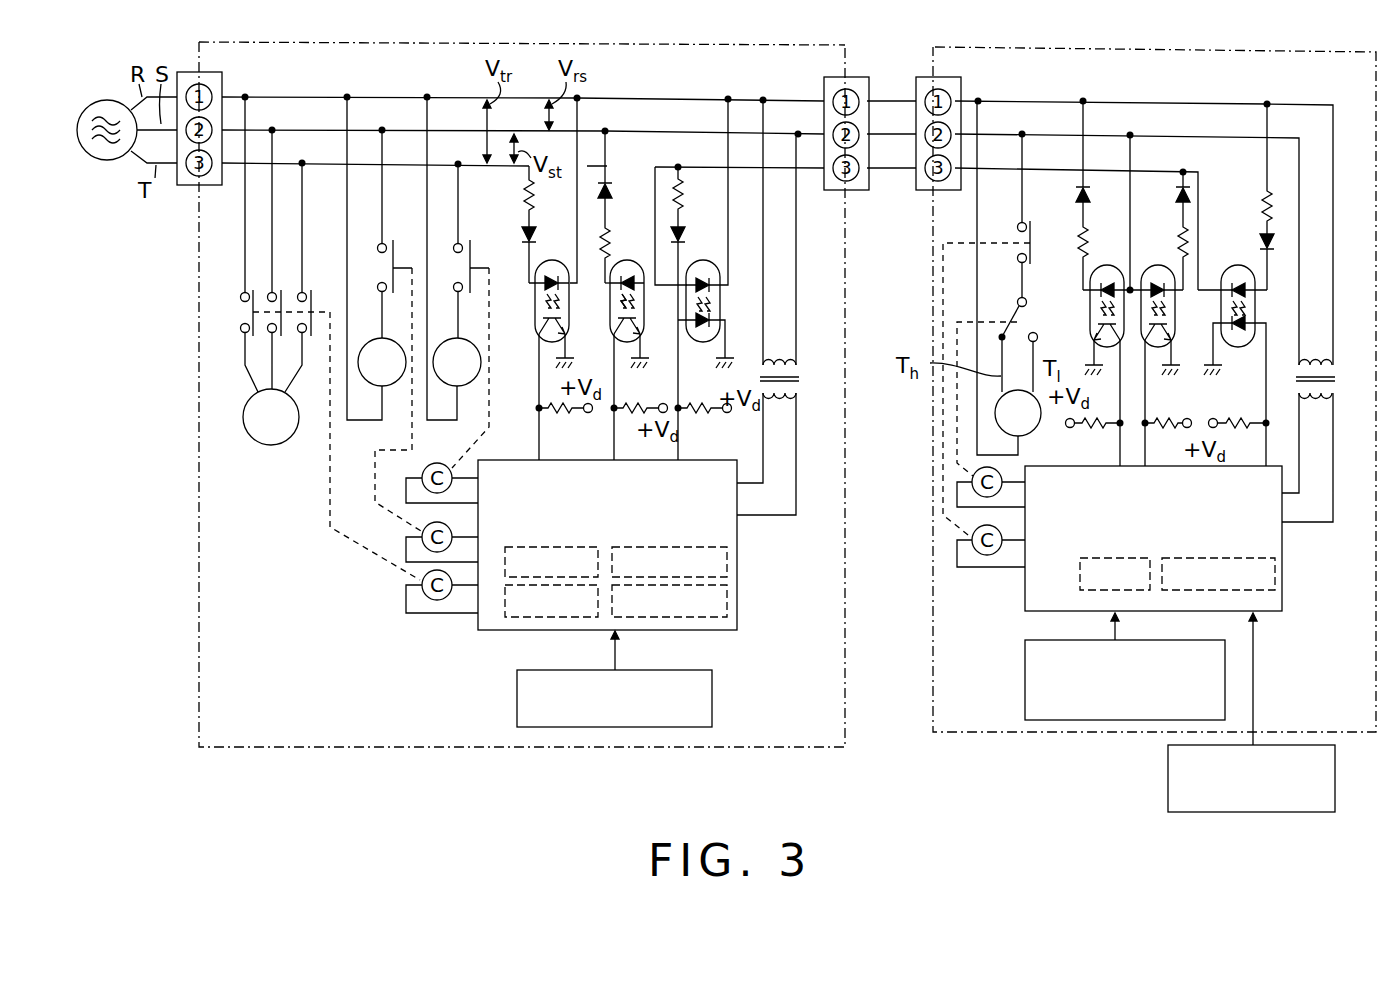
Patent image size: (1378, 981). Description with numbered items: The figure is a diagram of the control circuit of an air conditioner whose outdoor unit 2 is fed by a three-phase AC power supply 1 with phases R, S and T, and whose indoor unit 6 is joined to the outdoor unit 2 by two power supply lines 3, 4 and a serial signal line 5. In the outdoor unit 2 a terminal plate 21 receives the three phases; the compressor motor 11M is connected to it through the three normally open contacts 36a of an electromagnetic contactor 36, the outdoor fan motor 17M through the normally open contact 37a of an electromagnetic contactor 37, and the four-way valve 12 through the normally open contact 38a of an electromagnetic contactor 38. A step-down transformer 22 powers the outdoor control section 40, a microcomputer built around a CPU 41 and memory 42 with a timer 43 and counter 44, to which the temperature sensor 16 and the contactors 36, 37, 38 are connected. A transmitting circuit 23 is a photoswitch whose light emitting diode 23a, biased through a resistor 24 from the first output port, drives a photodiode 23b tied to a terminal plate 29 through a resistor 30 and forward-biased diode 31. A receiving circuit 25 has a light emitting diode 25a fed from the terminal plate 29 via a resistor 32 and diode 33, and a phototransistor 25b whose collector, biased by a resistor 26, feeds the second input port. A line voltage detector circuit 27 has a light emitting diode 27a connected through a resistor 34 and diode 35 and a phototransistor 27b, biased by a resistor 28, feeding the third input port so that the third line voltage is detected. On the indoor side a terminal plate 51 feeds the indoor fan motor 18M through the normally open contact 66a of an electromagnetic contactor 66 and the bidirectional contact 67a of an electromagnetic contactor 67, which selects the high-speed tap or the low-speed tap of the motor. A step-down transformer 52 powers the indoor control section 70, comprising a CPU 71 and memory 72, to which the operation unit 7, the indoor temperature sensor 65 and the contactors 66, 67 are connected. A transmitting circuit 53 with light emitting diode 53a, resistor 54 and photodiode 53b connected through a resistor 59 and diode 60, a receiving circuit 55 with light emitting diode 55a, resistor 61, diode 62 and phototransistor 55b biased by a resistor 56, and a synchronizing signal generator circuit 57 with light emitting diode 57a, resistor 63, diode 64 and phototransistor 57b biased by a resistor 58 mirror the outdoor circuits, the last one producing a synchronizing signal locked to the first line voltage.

The three-phase AC power supply 1 is at (102, 98).
The outdoor unit 2 is at (416, 43).
The power supply line 3 is at (893, 100).
The power supply line 4 is at (901, 137).
The serial signal line 5 is at (880, 171).
The indoor unit 6 is at (1150, 51).
The operation unit 7 is at (1336, 768).
The compressor motor 11M is at (271, 445).
The four-way valve 12 is at (462, 386).
The temperature sensor 16 is at (714, 692).
The outdoor fan motor 17M is at (388, 386).
The indoor fan motor 18M is at (1038, 430).
The terminal plate 21 is at (189, 72).
The step-down transformer 22 is at (802, 382).
The transmitting circuit 23 is at (773, 281).
The light emitting diode 23a is at (720, 281).
The photodiode 23b is at (707, 342).
The resistor 24 is at (691, 418).
The receiving circuit 25 is at (618, 347).
The light emitting diode 25a is at (613, 322).
The phototransistor 25b is at (643, 330).
The resistor 26 is at (628, 418).
The line voltage detector circuit 27 is at (526, 280).
The light emitting diode 27a is at (540, 279).
The phototransistor 27b is at (540, 322).
The resistor 28 is at (556, 418).
The terminal plate 29 is at (856, 77).
The resistor 30 is at (684, 192).
The forward-biased diode 31 is at (686, 244).
The resistor 32 is at (610, 244).
The forward-biased diode 33 is at (608, 190).
The resistor 34 is at (525, 196).
The forward-biased diode 35 is at (533, 230).
The electromagnetic contactor 36 is at (421, 584).
The normally open contacts 36a is at (300, 292).
The electromagnetic contactor 37 is at (421, 536).
The normally open contact 37a is at (394, 240).
The electromagnetic contactor 38 is at (438, 463).
The normally open contact 38a is at (473, 250).
The outdoor control section 40 is at (625, 563).
The CPU 41 is at (504, 552).
The memory 42 is at (728, 560).
The timer 43 is at (531, 617).
The counter 44 is at (728, 600).
The terminal plate 51 is at (948, 77).
The step-down transformer 52 is at (1338, 387).
The transmitting circuit 53 is at (1244, 329).
The light emitting diode 53a is at (1240, 346).
The photodiode 53b is at (1237, 268).
The resistor 54 is at (1243, 430).
The receiving circuit 55 is at (1172, 351).
The light emitting diode 55a is at (1152, 280).
The phototransistor 55b is at (1172, 346).
The resistor 56 is at (1163, 430).
The synchronizing signal generator circuit 57 is at (1085, 280).
The light emitting diode 57a is at (1093, 288).
The phototransistor 57b is at (1096, 326).
The resistor 58 is at (1093, 430).
The resistor 59 is at (1262, 200).
The forward-biased diode 60 is at (1261, 244).
The resistor 61 is at (1178, 240).
The forward-biased diode 62 is at (1178, 190).
The resistor 63 is at (1089, 240).
The forward-biased diode 64 is at (1087, 190).
The indoor temperature sensor 65 is at (1025, 670).
The electromagnetic contactor 66 is at (971, 540).
The normally open contact 66a is at (1032, 242).
The electromagnetic contactor 67 is at (971, 482).
The bidirectional contact 67a is at (1026, 326).
The indoor control section 70 is at (1183, 554).
The CPU 71 is at (1148, 592).
The memory 72 is at (1212, 592).